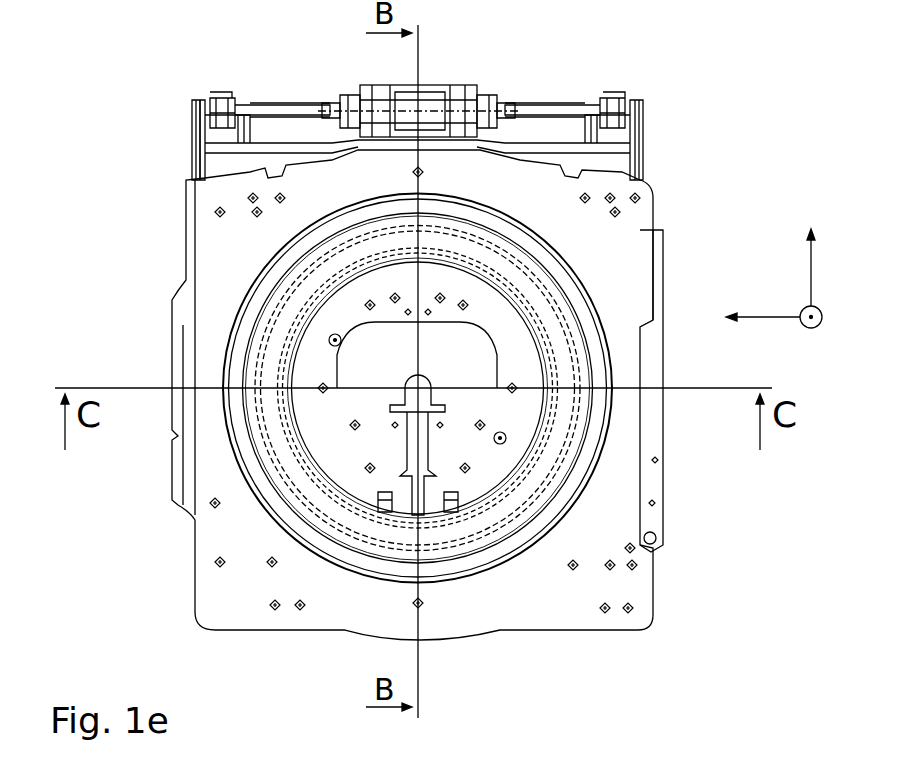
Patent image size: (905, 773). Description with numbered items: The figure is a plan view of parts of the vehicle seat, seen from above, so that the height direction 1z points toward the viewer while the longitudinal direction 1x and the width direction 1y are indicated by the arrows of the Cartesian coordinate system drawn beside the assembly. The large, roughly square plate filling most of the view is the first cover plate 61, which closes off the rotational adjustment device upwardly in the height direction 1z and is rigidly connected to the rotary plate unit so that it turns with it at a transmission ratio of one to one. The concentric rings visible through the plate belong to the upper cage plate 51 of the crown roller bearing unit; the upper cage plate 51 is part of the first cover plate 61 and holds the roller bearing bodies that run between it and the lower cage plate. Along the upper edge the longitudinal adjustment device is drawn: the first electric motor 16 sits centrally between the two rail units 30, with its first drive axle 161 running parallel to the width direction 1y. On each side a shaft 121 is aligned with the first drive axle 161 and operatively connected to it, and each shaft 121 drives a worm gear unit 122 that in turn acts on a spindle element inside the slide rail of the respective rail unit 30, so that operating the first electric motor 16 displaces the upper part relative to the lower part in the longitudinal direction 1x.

The first electric motor 16 is at (432, 93).
The first drive axle 161 is at (393, 108).
The shaft 121 is at (287, 105).
The worm gear unit 122 is at (218, 82).
The rail unit 30 is at (184, 125).
The upper cage plate 51 is at (530, 500).
The first cover plate 61 is at (500, 612).
The longitudinal direction 1x is at (815, 272).
The width direction 1y is at (766, 312).
The height direction 1z is at (820, 327).